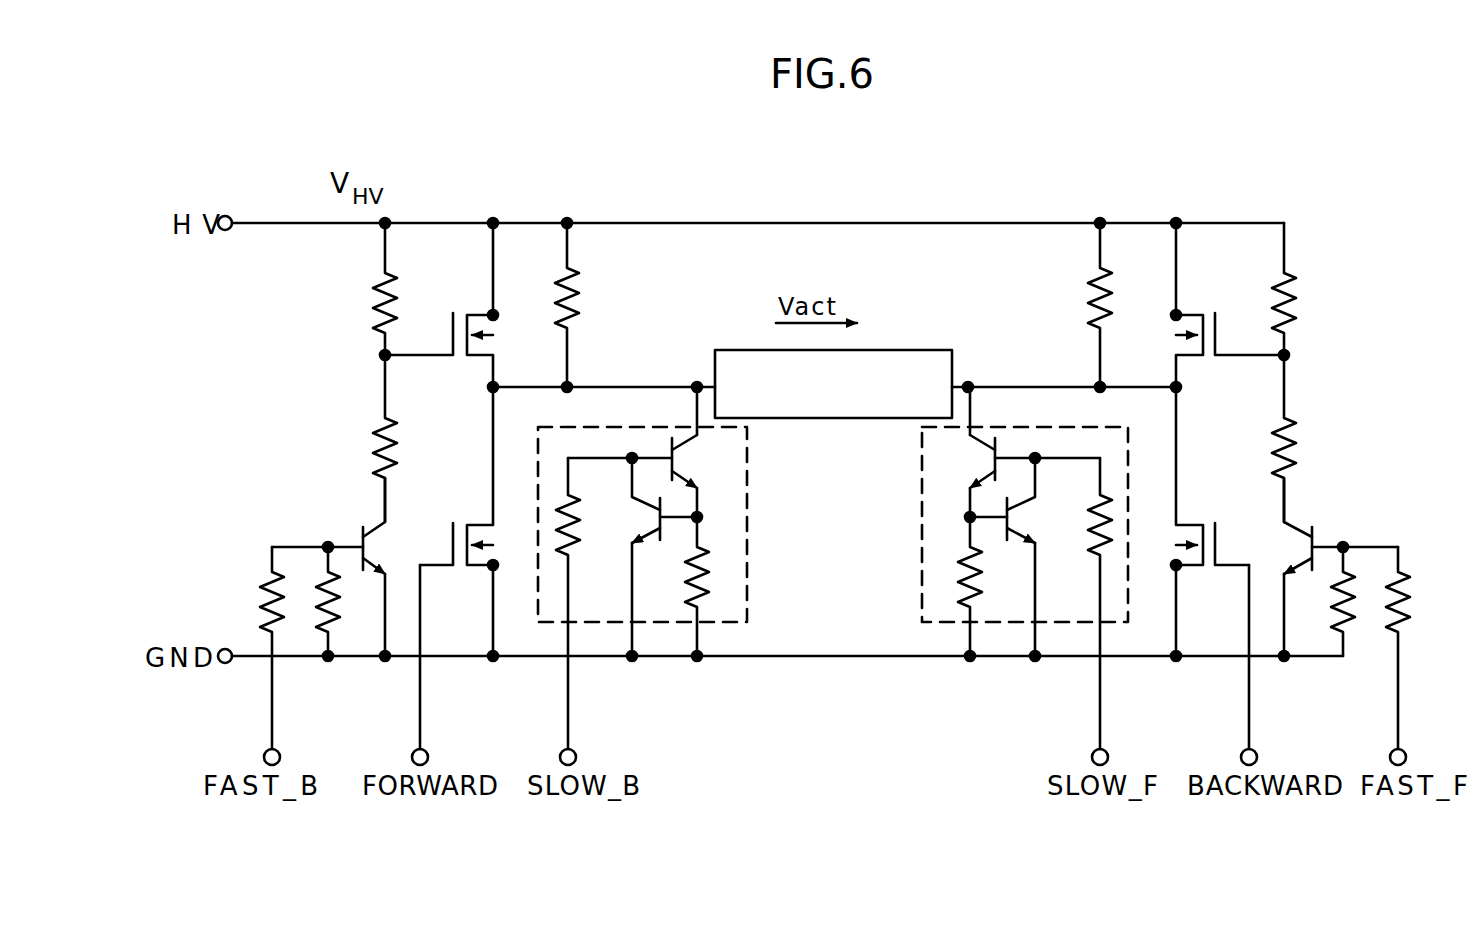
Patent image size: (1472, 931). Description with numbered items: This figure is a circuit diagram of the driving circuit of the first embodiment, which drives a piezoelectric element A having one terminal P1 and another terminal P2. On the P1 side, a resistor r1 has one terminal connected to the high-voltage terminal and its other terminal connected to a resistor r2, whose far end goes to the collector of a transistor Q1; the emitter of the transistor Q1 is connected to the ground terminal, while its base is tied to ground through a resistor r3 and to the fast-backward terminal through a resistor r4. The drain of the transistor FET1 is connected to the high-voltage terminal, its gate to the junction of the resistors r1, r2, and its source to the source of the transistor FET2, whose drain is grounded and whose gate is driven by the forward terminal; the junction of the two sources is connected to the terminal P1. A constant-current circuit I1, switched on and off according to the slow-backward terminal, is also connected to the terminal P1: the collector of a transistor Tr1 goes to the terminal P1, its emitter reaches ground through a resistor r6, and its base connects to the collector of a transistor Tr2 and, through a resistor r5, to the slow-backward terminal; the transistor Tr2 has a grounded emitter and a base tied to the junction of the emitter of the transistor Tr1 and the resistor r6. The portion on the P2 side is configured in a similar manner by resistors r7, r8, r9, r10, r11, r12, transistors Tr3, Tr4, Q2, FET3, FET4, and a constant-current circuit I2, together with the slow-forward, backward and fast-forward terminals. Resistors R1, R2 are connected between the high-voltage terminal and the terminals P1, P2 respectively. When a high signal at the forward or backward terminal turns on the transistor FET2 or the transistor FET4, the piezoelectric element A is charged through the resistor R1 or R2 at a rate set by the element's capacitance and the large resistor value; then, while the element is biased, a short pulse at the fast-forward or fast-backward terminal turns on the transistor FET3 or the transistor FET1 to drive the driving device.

The piezoelectric element A is at (886, 350).
The one terminal of the piezoelectric element P1 is at (697, 386).
The other terminal of the piezoelectric element P2 is at (970, 386).
The constant-current circuit I1 is at (645, 427).
The constant-current circuit I2 is at (1003, 426).
The transistor FET1 is at (454, 305).
The transistor FET2 is at (472, 524).
The transistor FET3 is at (1209, 305).
The transistor FET4 is at (1191, 524).
The transistor Q1 is at (390, 569).
The transistor Q2 is at (1276, 569).
The transistor Tr1 is at (648, 452).
The transistor Tr2 is at (643, 557).
The transistor Tr3 is at (1013, 452).
The transistor Tr4 is at (1014, 557).
The resistor R1 is at (580, 305).
The resistor R2 is at (1080, 305).
The resistor r1 is at (362, 289).
The resistor r2 is at (362, 438).
The resistor r3 is at (342, 601).
The resistor r4 is at (293, 648).
The resistor r5 is at (555, 557).
The resistor r6 is at (677, 586).
The resistor r7 is at (1262, 291).
The resistor r8 is at (1263, 438).
The resistor r9 is at (1345, 599).
The resistor r10 is at (1413, 648).
The resistor r11 is at (1085, 557).
The resistor r12 is at (951, 586).